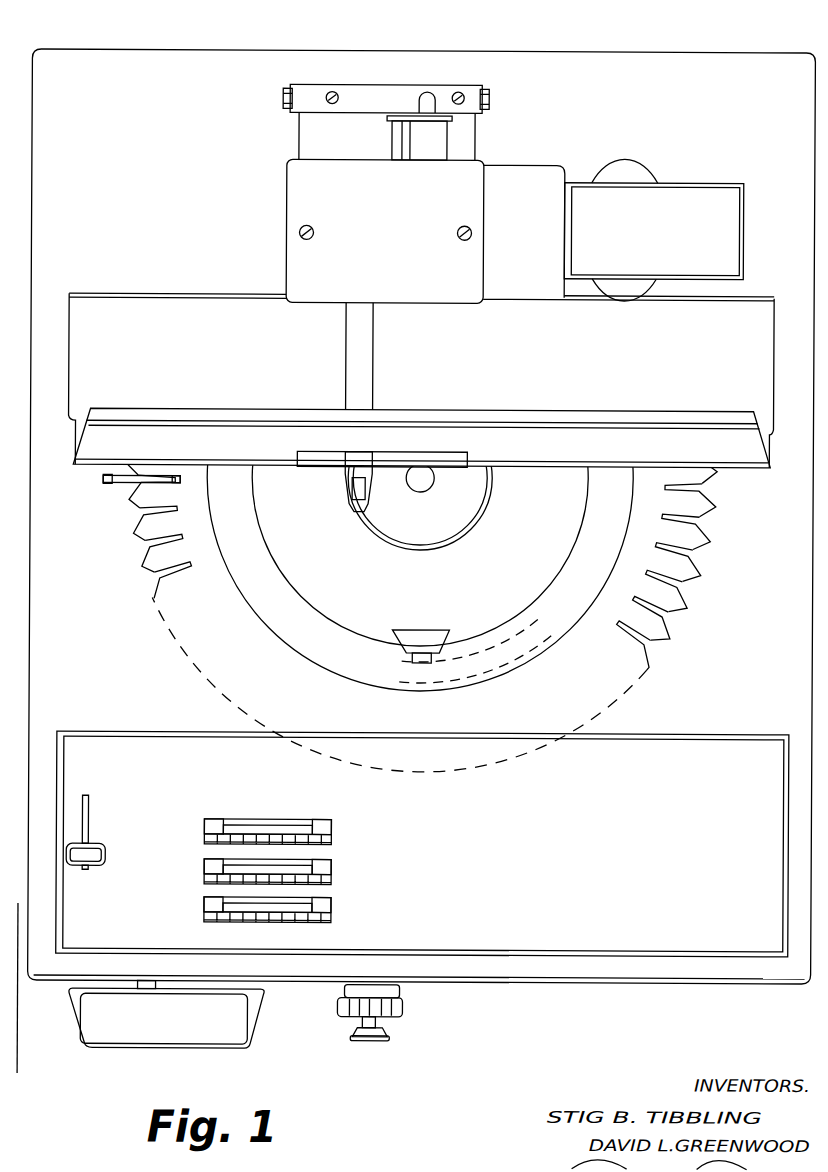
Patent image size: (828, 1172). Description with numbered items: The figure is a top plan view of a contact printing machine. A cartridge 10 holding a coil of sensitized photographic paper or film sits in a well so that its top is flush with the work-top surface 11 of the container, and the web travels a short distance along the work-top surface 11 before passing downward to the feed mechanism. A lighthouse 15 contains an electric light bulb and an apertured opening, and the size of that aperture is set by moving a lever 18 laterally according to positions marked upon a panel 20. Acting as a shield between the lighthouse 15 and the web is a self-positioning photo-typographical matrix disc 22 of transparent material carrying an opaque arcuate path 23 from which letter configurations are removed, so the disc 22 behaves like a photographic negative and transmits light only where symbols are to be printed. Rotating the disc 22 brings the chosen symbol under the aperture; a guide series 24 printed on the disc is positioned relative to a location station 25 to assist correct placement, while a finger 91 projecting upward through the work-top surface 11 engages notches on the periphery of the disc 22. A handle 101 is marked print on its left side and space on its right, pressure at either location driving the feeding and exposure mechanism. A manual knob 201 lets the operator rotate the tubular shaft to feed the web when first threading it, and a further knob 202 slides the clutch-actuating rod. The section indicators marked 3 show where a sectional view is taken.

The section line 3- 3 is at (50, 1067).
The cartridge 10 is at (613, 230).
The work-top surface 11 is at (422, 516).
The lighthouse 15 is at (385, 193).
The lever 18 is at (347, 492).
The panel 20 is at (421, 381).
The self-positioning photo-typographical matrix disc 22 is at (152, 561).
The opaque arcuate path 23 is at (288, 590).
The guide series 24 is at (355, 648).
The location station 25 is at (437, 631).
The finger 91 is at (105, 481).
The handle 101 is at (164, 1042).
The manual knob 201 is at (405, 1010).
The knob 202 is at (390, 1038).